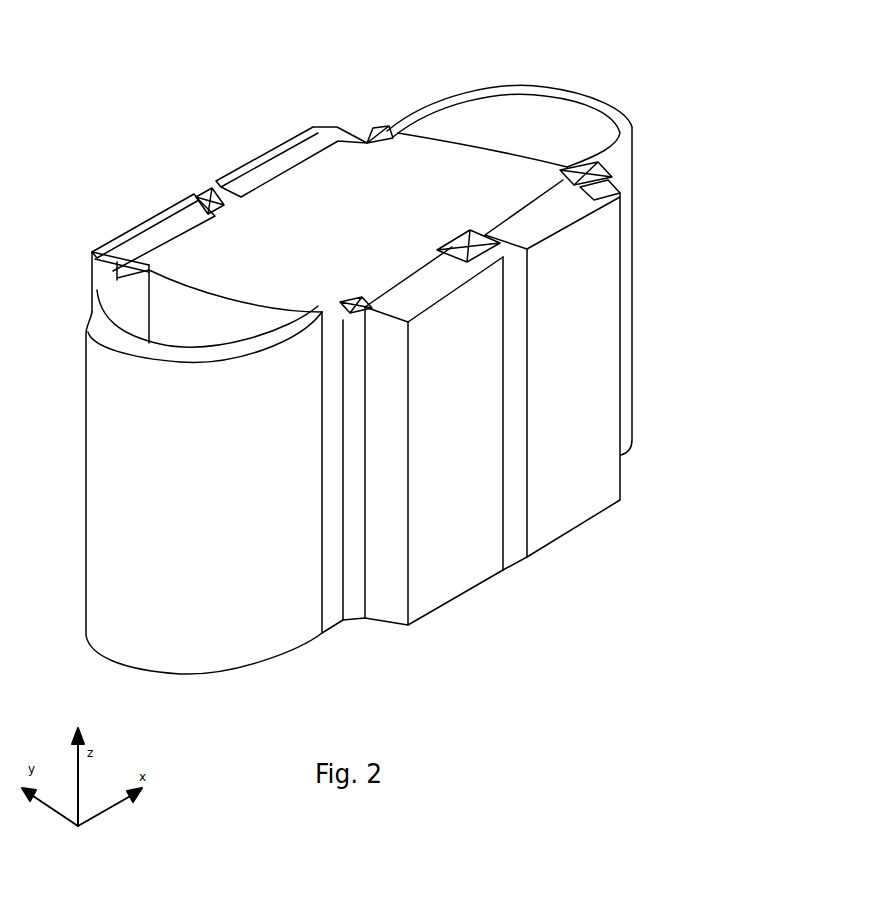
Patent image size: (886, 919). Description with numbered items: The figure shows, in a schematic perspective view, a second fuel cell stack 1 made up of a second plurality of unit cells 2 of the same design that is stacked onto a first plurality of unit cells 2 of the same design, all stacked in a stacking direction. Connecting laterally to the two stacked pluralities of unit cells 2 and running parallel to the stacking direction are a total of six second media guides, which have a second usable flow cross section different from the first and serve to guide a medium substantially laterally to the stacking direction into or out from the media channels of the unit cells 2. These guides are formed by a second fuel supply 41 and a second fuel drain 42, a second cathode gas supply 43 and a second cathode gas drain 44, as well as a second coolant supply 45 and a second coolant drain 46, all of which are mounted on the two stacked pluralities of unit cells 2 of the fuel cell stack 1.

The second fuel cell stack 1 is at (495, 66).
The unit cells 2 is at (607, 177).
The second fuel supply 41 is at (230, 657).
The second fuel drain 42 is at (570, 103).
The second cathode gas supply 43 is at (277, 156).
The second cathode gas drain 44 is at (453, 583).
The second coolant supply 45 is at (160, 224).
The second coolant drain 46 is at (598, 332).